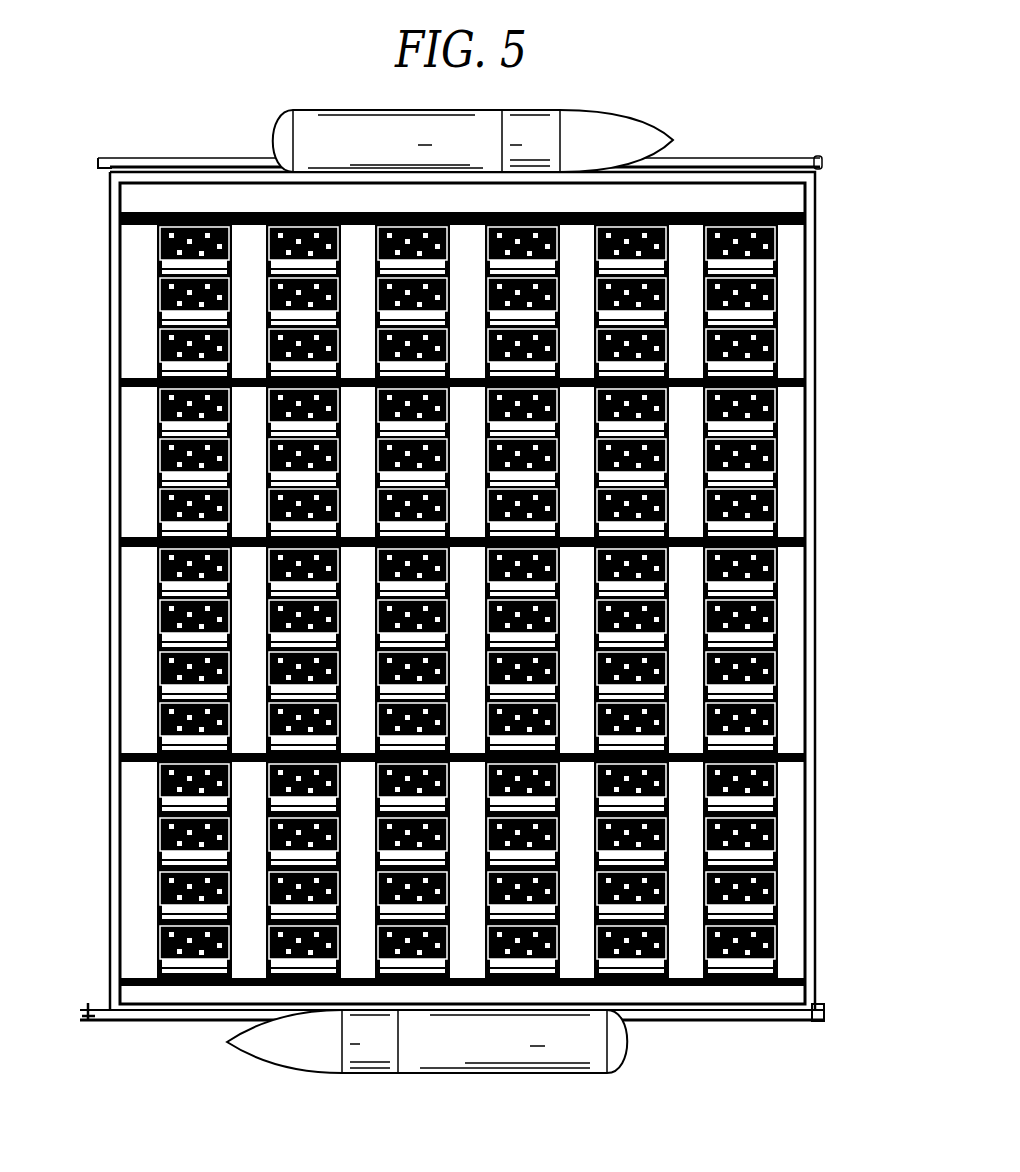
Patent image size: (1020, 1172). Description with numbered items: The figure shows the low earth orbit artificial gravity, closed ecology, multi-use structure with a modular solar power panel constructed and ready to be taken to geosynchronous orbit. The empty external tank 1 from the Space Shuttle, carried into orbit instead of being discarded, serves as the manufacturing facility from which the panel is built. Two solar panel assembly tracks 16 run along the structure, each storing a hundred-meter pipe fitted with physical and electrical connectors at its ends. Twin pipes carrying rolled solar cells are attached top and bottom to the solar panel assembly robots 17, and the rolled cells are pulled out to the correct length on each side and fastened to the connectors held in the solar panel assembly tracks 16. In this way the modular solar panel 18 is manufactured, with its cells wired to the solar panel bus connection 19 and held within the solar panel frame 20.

The external tank 1 is at (297, 1053).
The solar panel assembly track 16 is at (160, 1023).
The solar panel assembly robot 17 is at (820, 1010).
The solar panel 18 is at (178, 863).
The solar panel bus connection 19 is at (110, 758).
The solar panel frame 20 is at (112, 676).